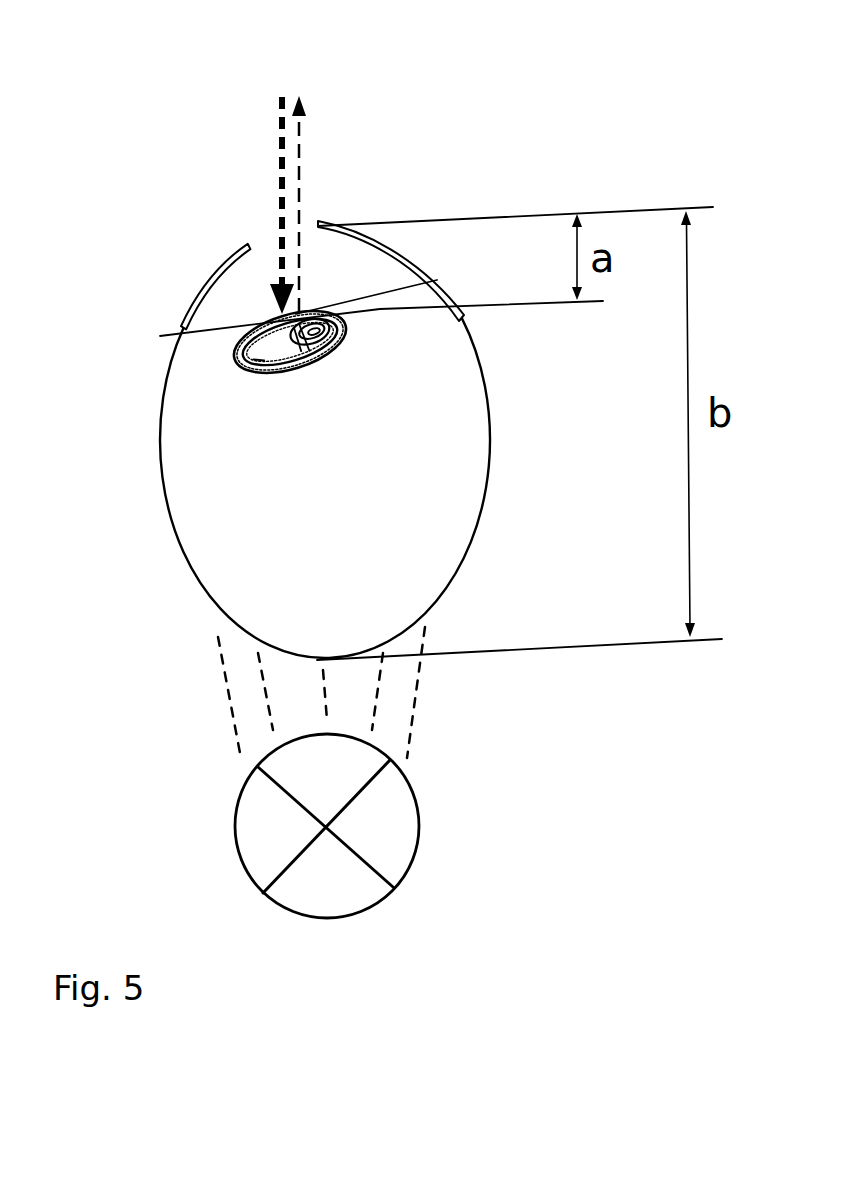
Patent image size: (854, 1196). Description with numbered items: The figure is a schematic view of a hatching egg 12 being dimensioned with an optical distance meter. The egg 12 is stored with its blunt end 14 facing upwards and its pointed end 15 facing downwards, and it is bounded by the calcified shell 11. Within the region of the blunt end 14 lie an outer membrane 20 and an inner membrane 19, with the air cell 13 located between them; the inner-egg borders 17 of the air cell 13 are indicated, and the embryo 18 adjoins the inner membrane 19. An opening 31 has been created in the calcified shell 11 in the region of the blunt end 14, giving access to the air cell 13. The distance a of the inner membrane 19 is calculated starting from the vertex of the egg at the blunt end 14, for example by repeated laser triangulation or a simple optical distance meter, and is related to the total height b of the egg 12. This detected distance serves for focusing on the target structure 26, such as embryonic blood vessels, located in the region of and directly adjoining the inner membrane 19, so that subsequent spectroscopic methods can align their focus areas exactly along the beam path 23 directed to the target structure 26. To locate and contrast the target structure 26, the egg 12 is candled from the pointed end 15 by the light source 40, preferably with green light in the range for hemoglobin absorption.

The calcified shell 11 is at (173, 540).
The hatching egg 12 is at (484, 458).
The air cell 13 is at (243, 292).
The blunt end 14 is at (258, 203).
The pointed end 15 is at (323, 662).
The inner-egg borders 17 is at (160, 335).
The embryo 18 is at (267, 347).
The inner membrane 19 is at (380, 292).
The outer membrane 20 is at (197, 303).
The beam path 23 is at (287, 90).
The target structure 26 is at (298, 312).
The opening 31 is at (307, 222).
The light source 40 is at (247, 832).